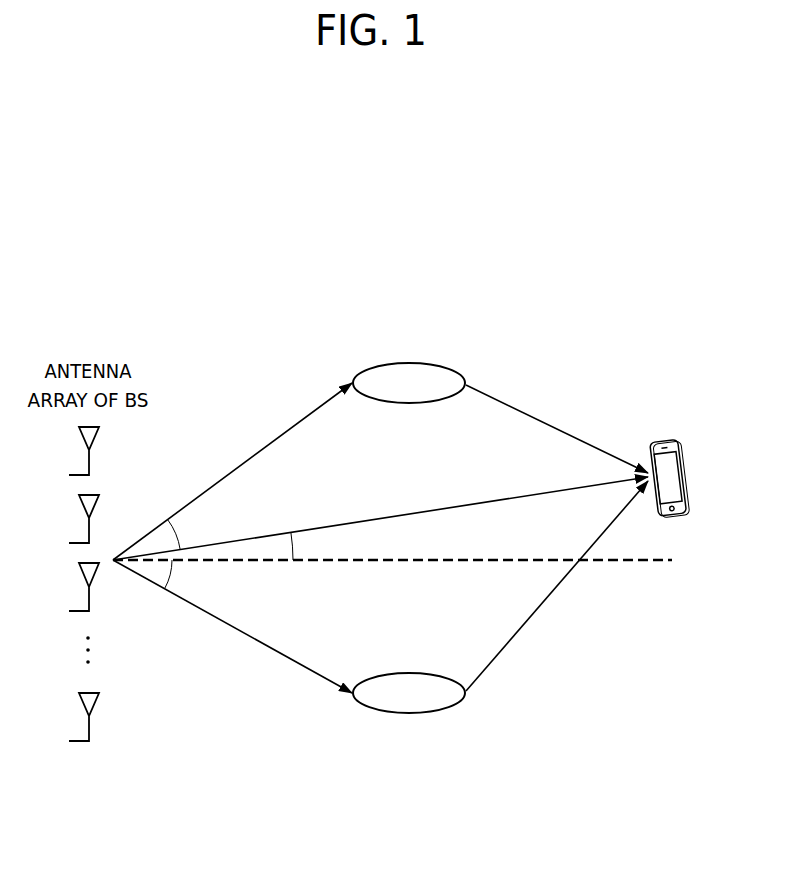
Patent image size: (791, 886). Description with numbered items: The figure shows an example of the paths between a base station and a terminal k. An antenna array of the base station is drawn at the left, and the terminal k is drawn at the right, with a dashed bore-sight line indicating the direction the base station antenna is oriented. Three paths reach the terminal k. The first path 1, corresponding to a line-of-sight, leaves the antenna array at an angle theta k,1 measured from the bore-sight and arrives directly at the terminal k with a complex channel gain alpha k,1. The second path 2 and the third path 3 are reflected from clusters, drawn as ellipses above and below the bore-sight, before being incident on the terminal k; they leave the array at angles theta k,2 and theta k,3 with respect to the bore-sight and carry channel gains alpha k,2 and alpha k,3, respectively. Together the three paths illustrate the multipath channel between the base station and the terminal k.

The first path k,1 is at (380, 516).
The second path k,2 is at (380, 461).
The third path k,3 is at (380, 597).
The first path 1 is at (317, 547).
The second path 2 is at (194, 532).
The third path 3 is at (190, 579).
The terminal k is at (675, 493).